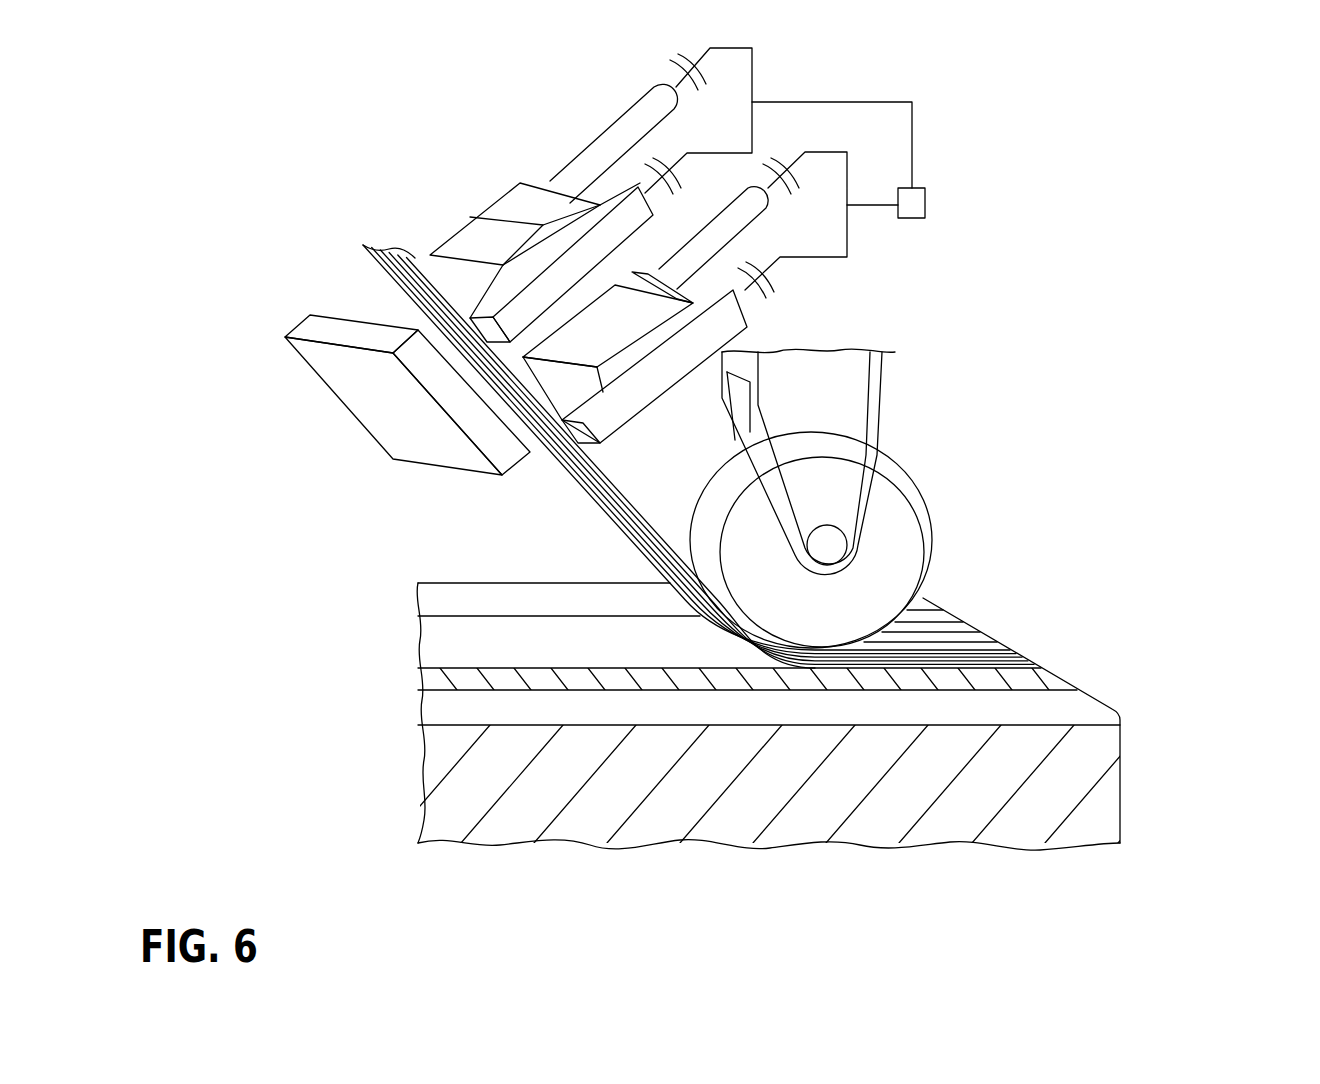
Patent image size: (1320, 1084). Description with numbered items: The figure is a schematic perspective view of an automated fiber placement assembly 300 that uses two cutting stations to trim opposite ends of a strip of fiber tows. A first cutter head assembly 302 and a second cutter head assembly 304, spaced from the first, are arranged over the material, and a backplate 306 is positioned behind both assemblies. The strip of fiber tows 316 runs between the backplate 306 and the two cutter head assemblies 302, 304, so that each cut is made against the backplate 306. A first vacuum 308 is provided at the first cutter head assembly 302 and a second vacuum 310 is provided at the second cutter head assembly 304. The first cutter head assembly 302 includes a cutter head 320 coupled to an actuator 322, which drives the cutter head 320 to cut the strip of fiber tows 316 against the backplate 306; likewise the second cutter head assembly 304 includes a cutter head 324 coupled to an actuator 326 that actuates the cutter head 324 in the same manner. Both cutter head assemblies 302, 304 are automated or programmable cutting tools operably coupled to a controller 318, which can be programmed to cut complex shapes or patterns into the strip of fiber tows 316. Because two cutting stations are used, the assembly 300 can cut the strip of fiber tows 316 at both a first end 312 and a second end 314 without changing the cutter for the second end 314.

The automated fiber placement assembly 300 is at (1100, 313).
The first cutter head assembly 302 is at (497, 187).
The second cutter head assembly 304 is at (628, 307).
The backplate 306 is at (350, 382).
The first vacuum 308 is at (465, 287).
The second vacuum 310 is at (718, 330).
The first end 312 is at (1007, 642).
The second end 314 is at (358, 240).
The strip of fiber tows 316 is at (395, 280).
The controller 318 is at (913, 210).
The cutter head 320 is at (543, 210).
The actuator 322 is at (587, 162).
The cutter head 324 is at (588, 355).
The actuator 326 is at (737, 222).